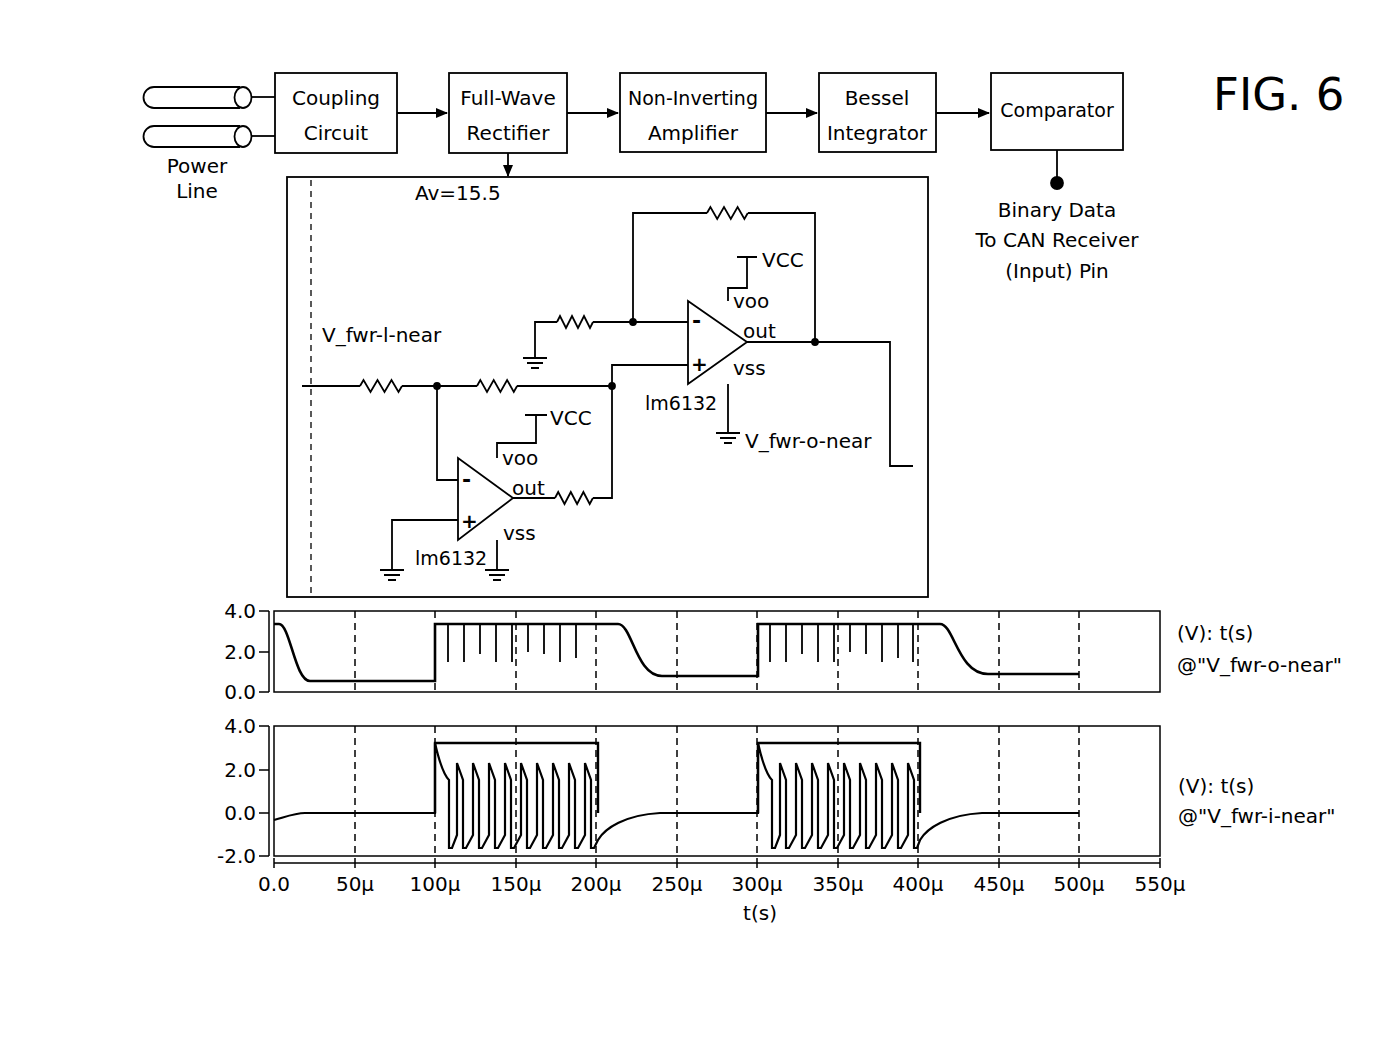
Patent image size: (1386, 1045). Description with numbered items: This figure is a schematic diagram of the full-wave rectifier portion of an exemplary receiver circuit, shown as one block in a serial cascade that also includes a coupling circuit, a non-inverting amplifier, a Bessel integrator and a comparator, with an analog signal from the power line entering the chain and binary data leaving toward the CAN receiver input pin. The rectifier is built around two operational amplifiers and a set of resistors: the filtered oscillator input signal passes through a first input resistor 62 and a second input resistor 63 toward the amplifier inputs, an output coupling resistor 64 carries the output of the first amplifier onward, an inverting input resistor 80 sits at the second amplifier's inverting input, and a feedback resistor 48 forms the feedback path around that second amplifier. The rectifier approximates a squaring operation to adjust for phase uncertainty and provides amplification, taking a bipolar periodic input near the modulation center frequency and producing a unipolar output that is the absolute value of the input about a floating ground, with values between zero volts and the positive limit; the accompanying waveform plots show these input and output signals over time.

The resistor r62 10k 62 is at (381, 387).
The resistor r63 4.99k 63 is at (495, 387).
The resistor r64 15k 64 is at (574, 498).
The resistor r80 4.99k 80 is at (576, 323).
The resistor r48 150k 48 is at (728, 213).